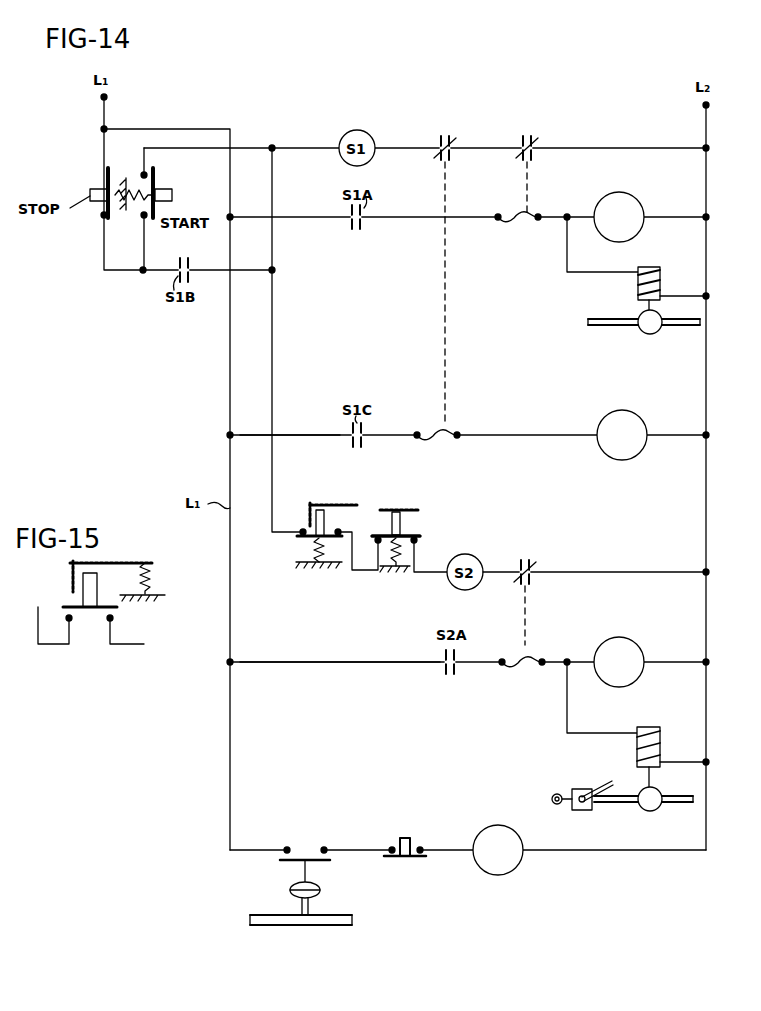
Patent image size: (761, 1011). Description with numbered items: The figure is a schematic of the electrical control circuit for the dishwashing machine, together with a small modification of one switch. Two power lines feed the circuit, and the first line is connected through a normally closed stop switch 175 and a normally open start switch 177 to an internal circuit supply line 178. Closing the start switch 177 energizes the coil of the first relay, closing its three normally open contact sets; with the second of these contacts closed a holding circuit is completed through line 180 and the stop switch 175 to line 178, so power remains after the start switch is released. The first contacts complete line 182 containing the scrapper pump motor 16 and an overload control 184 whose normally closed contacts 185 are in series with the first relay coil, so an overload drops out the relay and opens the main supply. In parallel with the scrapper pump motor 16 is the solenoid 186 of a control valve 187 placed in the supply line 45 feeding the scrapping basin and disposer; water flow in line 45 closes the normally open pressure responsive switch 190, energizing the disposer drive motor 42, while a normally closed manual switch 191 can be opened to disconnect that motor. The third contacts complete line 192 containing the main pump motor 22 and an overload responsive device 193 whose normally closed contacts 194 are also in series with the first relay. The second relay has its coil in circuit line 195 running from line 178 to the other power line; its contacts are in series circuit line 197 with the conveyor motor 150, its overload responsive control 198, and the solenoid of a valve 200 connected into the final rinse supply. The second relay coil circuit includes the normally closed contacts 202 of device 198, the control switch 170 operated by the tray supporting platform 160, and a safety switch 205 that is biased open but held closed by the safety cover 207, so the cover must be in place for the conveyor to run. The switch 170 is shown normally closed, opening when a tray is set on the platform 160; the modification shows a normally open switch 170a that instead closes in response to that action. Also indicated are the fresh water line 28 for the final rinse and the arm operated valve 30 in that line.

In FIG. 14, the scrapper pump motor 16 is at (612, 193).
In FIG. 14, the main pump motor 22 is at (610, 416).
In FIG. 14, the fresh water line 28 is at (612, 806).
In FIG. 14, the arm operated valve 30 is at (575, 787).
In FIG. 14, the disposer drive motor 42 is at (505, 872).
In FIG. 14, the supply line 45 is at (622, 328).
In FIG. 14, the conveyor motor 150 is at (616, 638).
In FIG. 14, the supporting platform 160 is at (338, 504).
In FIG. 15, the supporting platform 160 is at (118, 563).
In FIG. 14, the control switch 170 is at (309, 528).
In FIG. 15, the normally open switch 170a is at (88, 618).
In FIG. 14, the stop switch 175 is at (100, 182).
In FIG. 14, the start switch 177 is at (162, 186).
In FIG. 14, the internal circuit supply line 178 is at (274, 176).
In FIG. 14, the holding circuit line 180 is at (154, 274).
In FIG. 14, the circuit line 182 is at (390, 220).
In FIG. 14, the overload control 184 is at (503, 222).
In FIG. 14, the normally closed contacts 185 is at (528, 136).
In FIG. 14, the solenoid 186 is at (650, 267).
In FIG. 14, the control valve 187 is at (640, 316).
In FIG. 14, the pressure responsive switch 190 is at (320, 870).
In FIG. 14, the manual switch 191 is at (404, 857).
In FIG. 14, the circuit line 192 is at (306, 434).
In FIG. 14, the overload responsive device 193 is at (428, 434).
In FIG. 14, the normally closed contacts 194 is at (444, 136).
In FIG. 14, the circuit line 195 is at (428, 576).
In FIG. 14, the series circuit line 197 is at (353, 665).
In FIG. 14, the overload responsive control 198 is at (512, 667).
In FIG. 14, the valve 200 is at (636, 790).
In FIG. 14, the normally closed contacts 202 is at (524, 556).
In FIG. 14, the safety switch 205 is at (416, 530).
In FIG. 14, the safety cover 207 is at (405, 511).